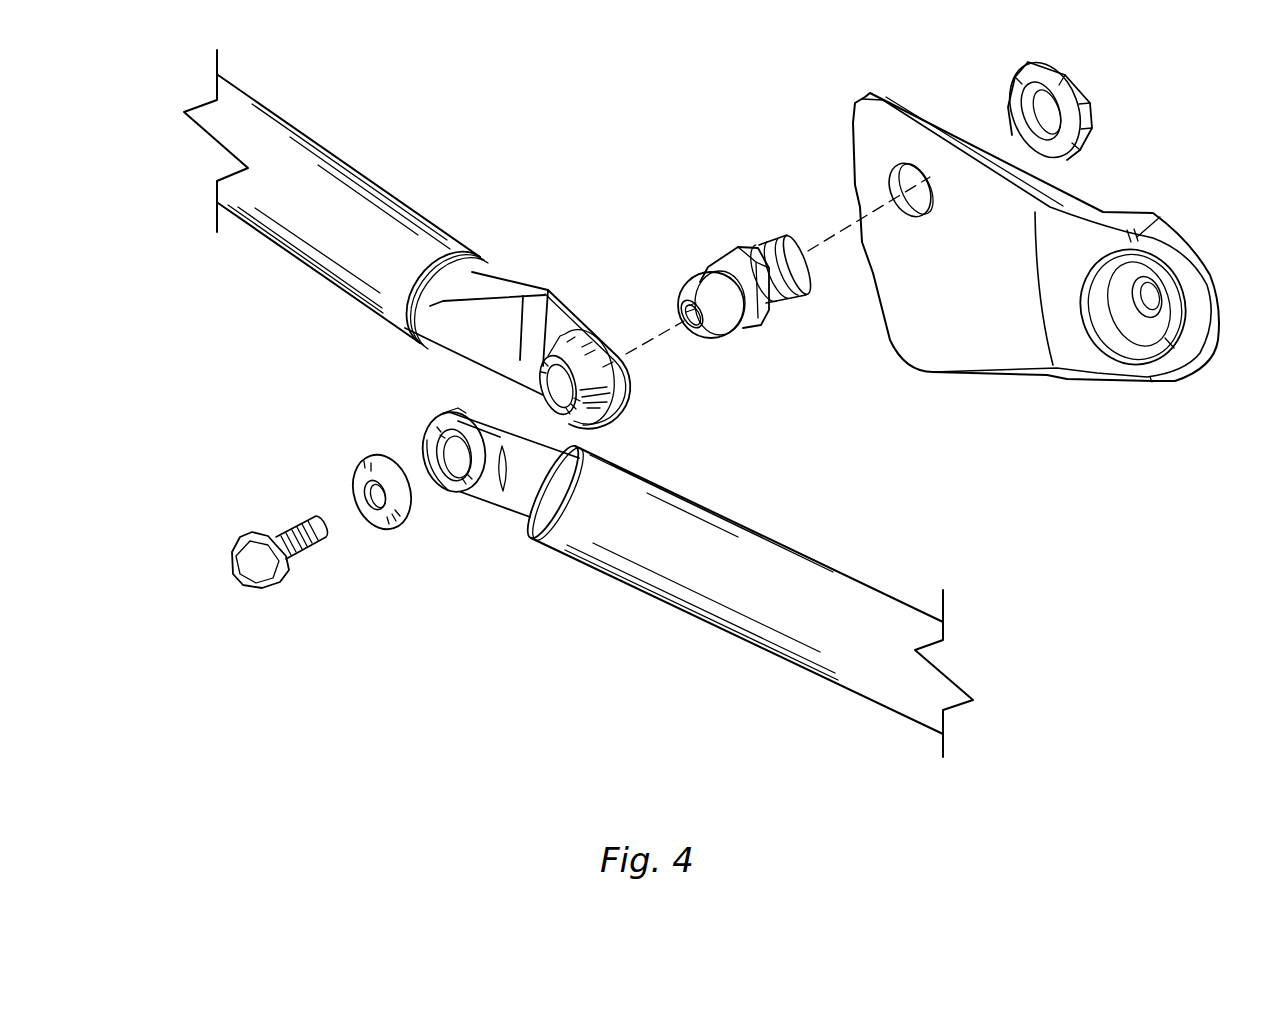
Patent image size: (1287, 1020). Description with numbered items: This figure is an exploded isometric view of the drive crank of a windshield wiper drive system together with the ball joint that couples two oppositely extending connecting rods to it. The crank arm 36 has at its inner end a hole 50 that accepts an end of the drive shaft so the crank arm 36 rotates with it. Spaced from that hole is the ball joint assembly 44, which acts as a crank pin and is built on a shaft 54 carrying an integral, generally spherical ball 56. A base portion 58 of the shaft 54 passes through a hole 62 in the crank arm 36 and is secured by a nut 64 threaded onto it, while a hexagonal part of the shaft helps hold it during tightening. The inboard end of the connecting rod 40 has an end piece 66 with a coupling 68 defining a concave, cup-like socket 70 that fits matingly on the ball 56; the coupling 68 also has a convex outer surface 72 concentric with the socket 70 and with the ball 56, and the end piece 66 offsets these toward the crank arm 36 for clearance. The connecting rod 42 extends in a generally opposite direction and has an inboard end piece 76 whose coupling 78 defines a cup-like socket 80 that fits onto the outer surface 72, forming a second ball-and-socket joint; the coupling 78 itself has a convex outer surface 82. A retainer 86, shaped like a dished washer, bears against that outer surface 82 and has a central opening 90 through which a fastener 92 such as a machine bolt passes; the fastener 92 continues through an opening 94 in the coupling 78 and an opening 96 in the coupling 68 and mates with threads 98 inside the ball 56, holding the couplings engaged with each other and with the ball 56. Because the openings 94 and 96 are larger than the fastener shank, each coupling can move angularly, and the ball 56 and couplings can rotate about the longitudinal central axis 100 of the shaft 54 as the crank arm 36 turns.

The crank arm 36 is at (1050, 380).
The connecting rod 40 is at (312, 139).
The connecting rod 42 is at (797, 548).
The ball joint assembly 44 is at (352, 561).
The hole 50 is at (1157, 299).
The shaft 54 is at (755, 318).
The ball 56 is at (718, 338).
The base portion 58 is at (787, 293).
The hole 62 is at (913, 219).
The nut 64 is at (1092, 136).
The end piece 66 is at (512, 274).
The coupling 68 is at (613, 323).
The socket 70 is at (578, 388).
The outer surface 72 is at (603, 368).
The end piece 76 is at (520, 503).
The coupling 78 is at (450, 406).
The socket 80 is at (454, 490).
The outer surface 82 is at (447, 406).
The retainer 86 is at (368, 455).
The central opening 90 is at (358, 491).
The fastener 92 is at (292, 527).
The opening 94 is at (440, 468).
The opening 96 is at (542, 400).
The threads 98 is at (678, 315).
The central axis 100 is at (822, 242).